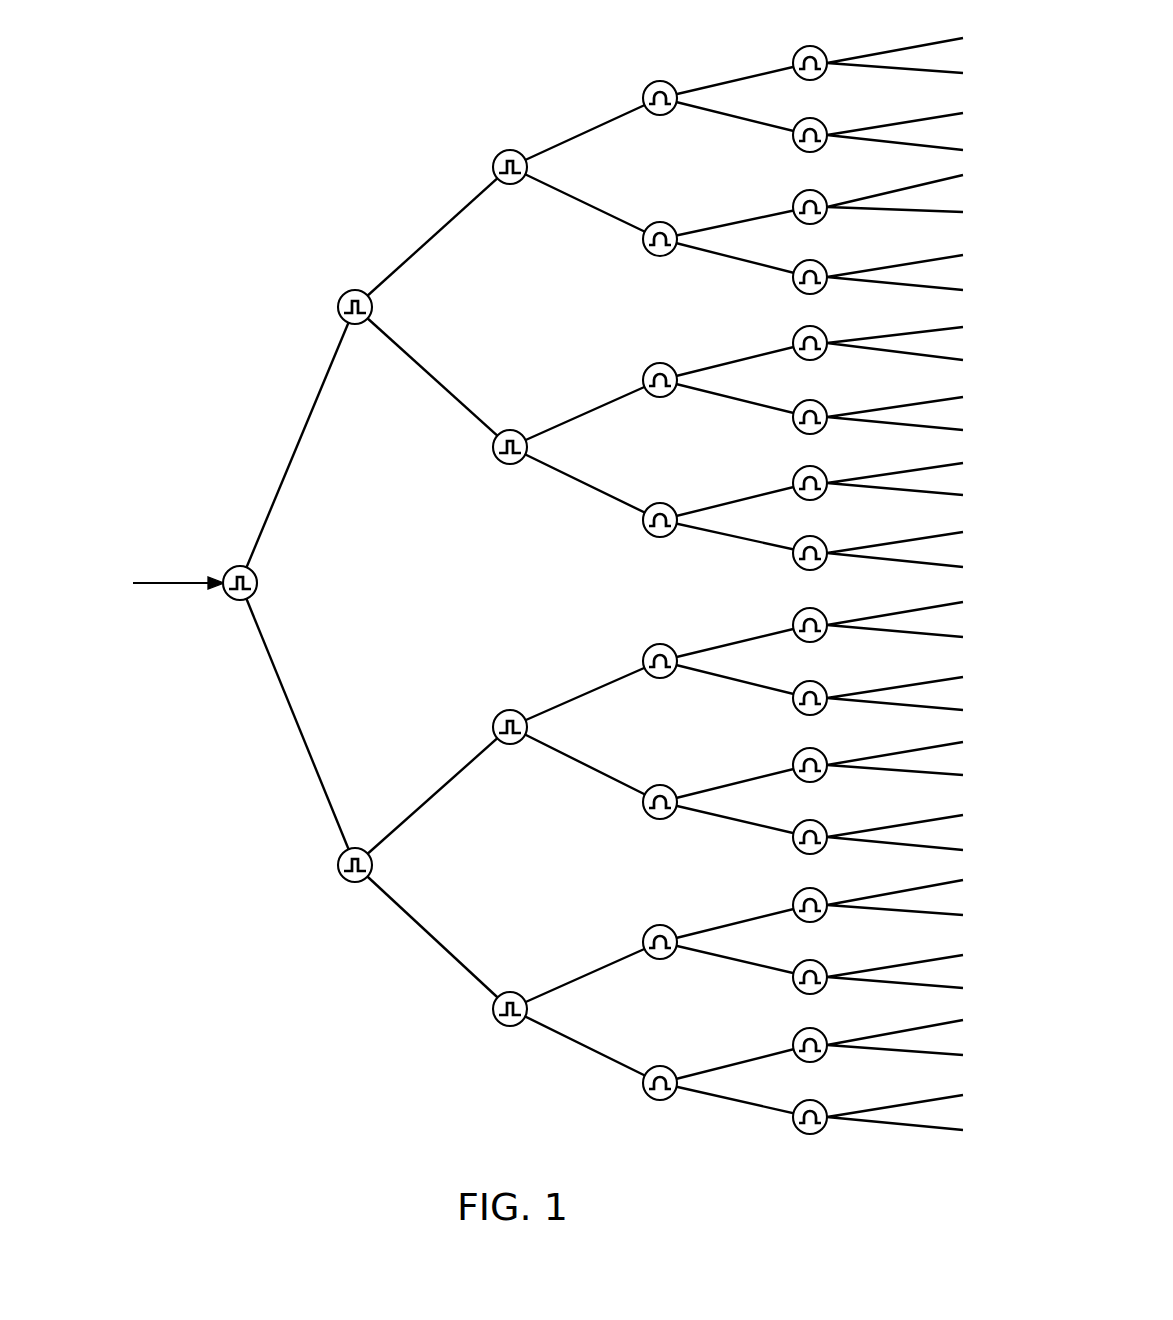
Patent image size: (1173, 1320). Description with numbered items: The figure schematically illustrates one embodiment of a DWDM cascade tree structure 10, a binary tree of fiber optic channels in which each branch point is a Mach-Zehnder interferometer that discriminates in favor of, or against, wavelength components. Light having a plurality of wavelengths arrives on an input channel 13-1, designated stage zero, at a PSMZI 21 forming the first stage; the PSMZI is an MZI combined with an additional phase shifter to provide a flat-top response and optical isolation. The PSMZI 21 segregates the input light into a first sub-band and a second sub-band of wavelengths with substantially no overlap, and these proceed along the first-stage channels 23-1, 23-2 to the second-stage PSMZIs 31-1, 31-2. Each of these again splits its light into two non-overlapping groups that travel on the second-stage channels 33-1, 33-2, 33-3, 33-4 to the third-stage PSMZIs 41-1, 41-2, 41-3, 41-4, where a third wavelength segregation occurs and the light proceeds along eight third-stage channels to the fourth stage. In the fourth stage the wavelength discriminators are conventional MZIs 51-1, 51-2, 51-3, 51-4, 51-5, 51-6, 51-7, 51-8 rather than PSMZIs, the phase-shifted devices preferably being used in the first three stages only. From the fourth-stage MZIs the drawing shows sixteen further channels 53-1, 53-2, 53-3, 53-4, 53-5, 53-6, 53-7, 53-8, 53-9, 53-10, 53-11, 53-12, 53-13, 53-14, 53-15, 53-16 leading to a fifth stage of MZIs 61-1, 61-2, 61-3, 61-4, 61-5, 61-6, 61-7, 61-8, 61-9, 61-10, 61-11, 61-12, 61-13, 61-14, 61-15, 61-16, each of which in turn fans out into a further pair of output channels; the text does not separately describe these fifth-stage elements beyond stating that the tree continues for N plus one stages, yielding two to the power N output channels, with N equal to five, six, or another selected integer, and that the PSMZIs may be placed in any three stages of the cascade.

The DWDM cascade tree structure 10 is at (256, 200).
The input channel 13-1 is at (162, 590).
The PSMZI 21 is at (258, 583).
The channel 23-1 is at (287, 695).
The channel 23-2 is at (288, 467).
The PSMZI 31-1 is at (355, 845).
The PSMZI 31-2 is at (355, 290).
The channel 33-1 is at (455, 960).
The channel 33-2 is at (452, 776).
The channel 33-3 is at (448, 393).
The channel 33-4 is at (453, 216).
The PSMZI 41-1 is at (510, 989).
The PSMZI 41-2 is at (510, 707).
The PSMZI 41-3 is at (510, 427).
The PSMZI 41-4 is at (510, 147).
The MZI 51-1 is at (660, 1066).
The MZI 51-2 is at (660, 925).
The MZI 51-3 is at (660, 785).
The MZI 51-4 is at (660, 644).
The MZI 51-5 is at (660, 503).
The MZI 51-6 is at (660, 363).
The MZI 51-7 is at (660, 222).
The MZI 51-8 is at (660, 81).
The fourth stage branch line 53-1 is at (722, 1098).
The fourth stage branch line 53-2 is at (760, 1055).
The fourth stage branch line 53-3 is at (718, 957).
The fourth stage branch line 53-4 is at (762, 915).
The fourth stage branch line 53-5 is at (718, 818).
The fourth stage branch line 53-6 is at (760, 776).
The fourth stage branch line 53-7 is at (706, 673).
The fourth stage branch line 53-8 is at (745, 640).
The fourth stage branch line 53-9 is at (708, 537).
The fourth stage branch line 53-10 is at (753, 498).
The fourth stage branch line 53-11 is at (708, 398).
The fourth stage branch line 53-12 is at (757, 352).
The fourth stage branch line 53-13 is at (717, 257).
The fourth stage branch line 53-14 is at (758, 217).
The fourth stage branch line 53-15 is at (720, 115).
The fourth stage branch line 53-16 is at (753, 75).
The output stage shaping element 61-1 is at (827, 1110).
The output stage shaping element 61-2 is at (827, 1038).
The output stage shaping element 61-3 is at (827, 970).
The output stage shaping element 61-4 is at (827, 898).
The output stage shaping element 61-5 is at (827, 830).
The output stage shaping element 61-6 is at (827, 758).
The output stage shaping element 61-7 is at (827, 691).
The output stage shaping element 61-8 is at (827, 618).
The output stage shaping element 61-9 is at (827, 546).
The output stage shaping element 61-10 is at (827, 477).
The output stage shaping element 61-11 is at (827, 410).
The output stage shaping element 61-12 is at (827, 336).
The output stage shaping element 61-13 is at (827, 270).
The output stage shaping element 61-14 is at (827, 200).
The output stage shaping element 61-15 is at (827, 128).
The output stage shaping element 61-16 is at (827, 56).